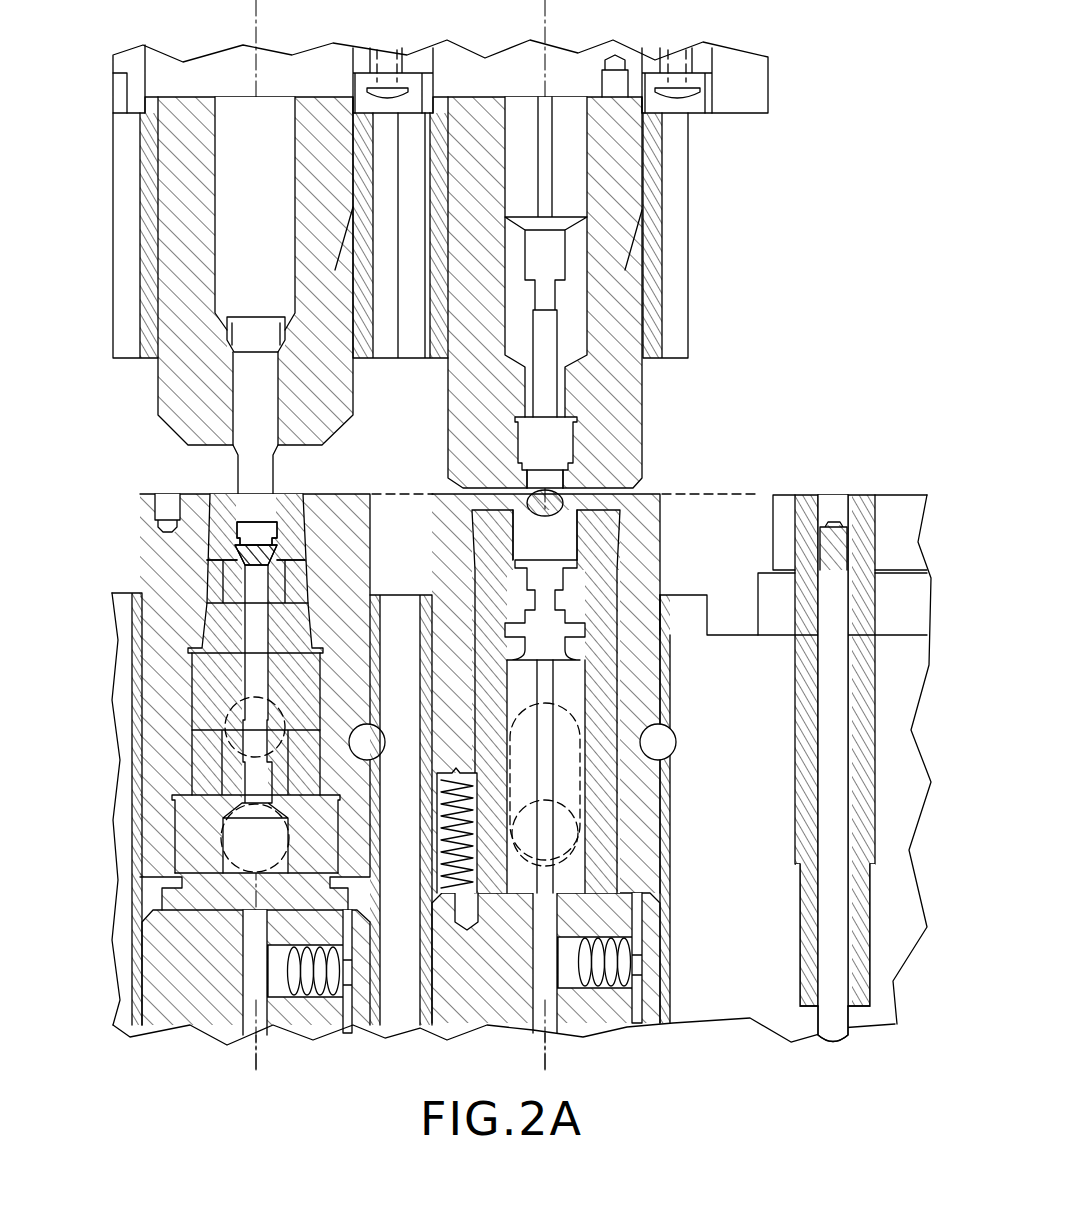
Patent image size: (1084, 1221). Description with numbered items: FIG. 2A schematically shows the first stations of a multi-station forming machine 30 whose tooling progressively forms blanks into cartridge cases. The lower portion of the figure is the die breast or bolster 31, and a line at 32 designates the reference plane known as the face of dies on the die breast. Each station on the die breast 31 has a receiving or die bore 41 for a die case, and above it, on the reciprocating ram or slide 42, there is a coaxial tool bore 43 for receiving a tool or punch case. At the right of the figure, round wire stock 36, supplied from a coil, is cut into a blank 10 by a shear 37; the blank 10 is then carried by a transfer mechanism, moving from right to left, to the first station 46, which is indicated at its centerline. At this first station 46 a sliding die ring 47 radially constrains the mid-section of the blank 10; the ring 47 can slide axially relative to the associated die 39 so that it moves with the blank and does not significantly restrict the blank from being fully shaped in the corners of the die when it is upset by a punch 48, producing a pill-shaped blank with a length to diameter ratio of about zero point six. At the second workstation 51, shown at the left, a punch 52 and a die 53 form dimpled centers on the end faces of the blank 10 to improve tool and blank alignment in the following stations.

The reciprocating ram or slide 42 is at (742, 128).
The tool bore 43 is at (348, 332).
The multi-station forming machine 30 is at (810, 379).
The punch 48 is at (562, 482).
The blank 10 is at (562, 495).
The sliding die ring 47 is at (580, 500).
The die 39 is at (580, 513).
The reference plane (face of dies) 32 is at (762, 494).
The shear 37 is at (903, 494).
The die breast or bolster 31 is at (692, 580).
The die bore 41 is at (372, 628).
The punch 52 is at (243, 530).
The die 53 is at (233, 578).
The round wire stock 36 is at (850, 984).
The second workstation 51 is at (256, 1058).
The first station 46 is at (545, 1058).